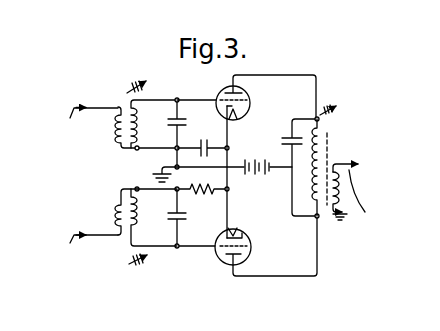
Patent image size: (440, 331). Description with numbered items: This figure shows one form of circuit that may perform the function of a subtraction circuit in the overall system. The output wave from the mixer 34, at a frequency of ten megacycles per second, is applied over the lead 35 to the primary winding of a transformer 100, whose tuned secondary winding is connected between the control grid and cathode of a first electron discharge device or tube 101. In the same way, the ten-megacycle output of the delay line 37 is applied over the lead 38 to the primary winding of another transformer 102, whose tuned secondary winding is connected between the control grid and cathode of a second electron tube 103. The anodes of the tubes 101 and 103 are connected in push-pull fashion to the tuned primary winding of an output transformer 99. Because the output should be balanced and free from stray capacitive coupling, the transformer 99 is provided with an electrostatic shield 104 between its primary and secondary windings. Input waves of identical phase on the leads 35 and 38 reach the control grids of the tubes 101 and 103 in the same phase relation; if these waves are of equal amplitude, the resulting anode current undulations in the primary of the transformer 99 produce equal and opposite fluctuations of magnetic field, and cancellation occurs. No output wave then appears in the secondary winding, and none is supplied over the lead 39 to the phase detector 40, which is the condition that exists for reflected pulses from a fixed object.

The mixer 34 is at (68, 143).
The lead 35 is at (100, 107).
The delay line 37 is at (63, 278).
The lead 38 is at (102, 233).
The lead 39 is at (350, 163).
The phase detector 40 is at (364, 218).
The output transformer 99 is at (342, 95).
The transformer 100 is at (123, 105).
The electron discharge device or tube 101 is at (219, 91).
The transformer 102 is at (125, 240).
The electron tube 103 is at (222, 263).
The electrostatic shield 104 is at (329, 157).